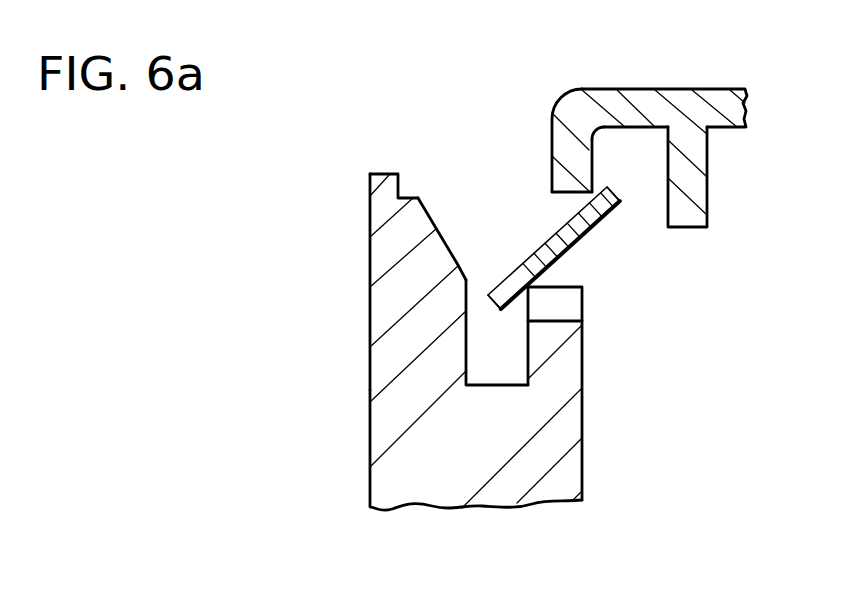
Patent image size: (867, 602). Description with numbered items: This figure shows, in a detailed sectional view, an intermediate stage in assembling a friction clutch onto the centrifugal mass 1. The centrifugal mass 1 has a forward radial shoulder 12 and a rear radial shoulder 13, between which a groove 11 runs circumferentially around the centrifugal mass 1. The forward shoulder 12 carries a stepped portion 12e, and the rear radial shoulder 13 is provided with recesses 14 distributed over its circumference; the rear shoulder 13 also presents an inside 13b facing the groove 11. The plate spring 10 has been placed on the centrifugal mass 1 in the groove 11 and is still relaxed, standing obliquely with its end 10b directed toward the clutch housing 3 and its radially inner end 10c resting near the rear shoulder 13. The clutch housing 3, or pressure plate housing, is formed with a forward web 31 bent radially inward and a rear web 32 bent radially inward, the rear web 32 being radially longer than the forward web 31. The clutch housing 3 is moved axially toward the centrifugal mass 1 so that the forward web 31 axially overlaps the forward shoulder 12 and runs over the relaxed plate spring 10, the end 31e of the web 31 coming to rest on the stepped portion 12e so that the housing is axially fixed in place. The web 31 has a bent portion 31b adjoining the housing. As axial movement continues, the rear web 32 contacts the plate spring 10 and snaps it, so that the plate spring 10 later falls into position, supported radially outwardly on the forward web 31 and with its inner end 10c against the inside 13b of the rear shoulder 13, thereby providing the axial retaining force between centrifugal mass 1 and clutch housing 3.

The centrifugal mass 1 is at (421, 490).
The clutch housing 3 is at (684, 66).
The plate spring 10 is at (530, 264).
The end of the plate spring 10b is at (620, 189).
The radially inner end of the plate spring 10c is at (496, 303).
The groove 11 is at (482, 370).
The forward radial shoulder 12 is at (393, 301).
The stepped portion 12e is at (399, 194).
The rear radial shoulder 13 is at (556, 436).
The inside of the rear shoulder 13b is at (528, 348).
The recesses 14 is at (565, 303).
The forward web 31 is at (550, 140).
The portion of the forward web 31b is at (614, 130).
The end of the web 31e is at (552, 196).
The rear web 32 is at (707, 187).